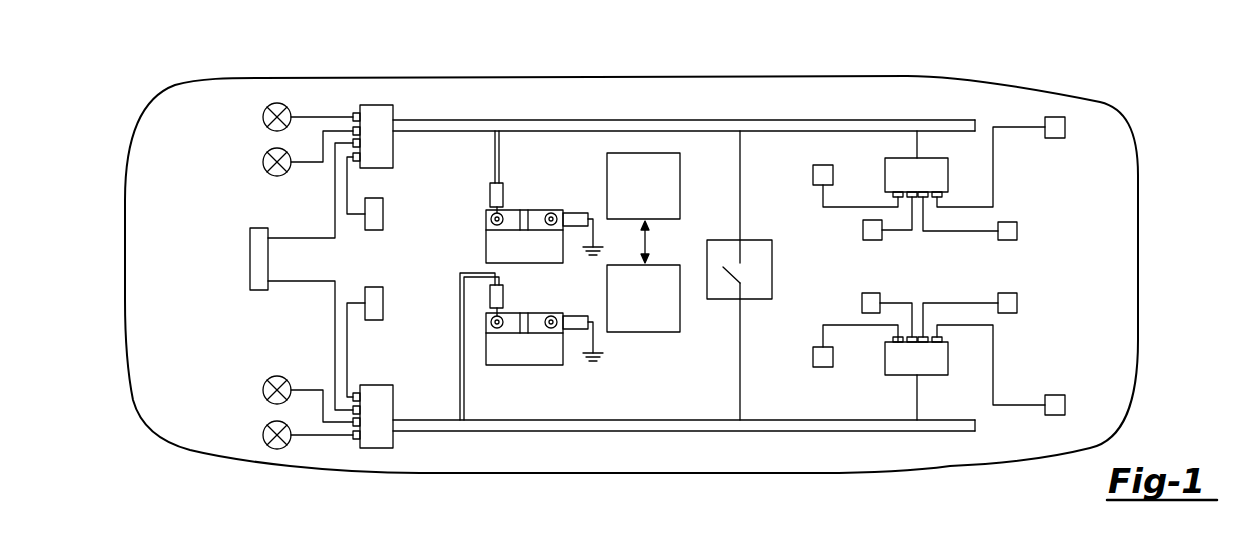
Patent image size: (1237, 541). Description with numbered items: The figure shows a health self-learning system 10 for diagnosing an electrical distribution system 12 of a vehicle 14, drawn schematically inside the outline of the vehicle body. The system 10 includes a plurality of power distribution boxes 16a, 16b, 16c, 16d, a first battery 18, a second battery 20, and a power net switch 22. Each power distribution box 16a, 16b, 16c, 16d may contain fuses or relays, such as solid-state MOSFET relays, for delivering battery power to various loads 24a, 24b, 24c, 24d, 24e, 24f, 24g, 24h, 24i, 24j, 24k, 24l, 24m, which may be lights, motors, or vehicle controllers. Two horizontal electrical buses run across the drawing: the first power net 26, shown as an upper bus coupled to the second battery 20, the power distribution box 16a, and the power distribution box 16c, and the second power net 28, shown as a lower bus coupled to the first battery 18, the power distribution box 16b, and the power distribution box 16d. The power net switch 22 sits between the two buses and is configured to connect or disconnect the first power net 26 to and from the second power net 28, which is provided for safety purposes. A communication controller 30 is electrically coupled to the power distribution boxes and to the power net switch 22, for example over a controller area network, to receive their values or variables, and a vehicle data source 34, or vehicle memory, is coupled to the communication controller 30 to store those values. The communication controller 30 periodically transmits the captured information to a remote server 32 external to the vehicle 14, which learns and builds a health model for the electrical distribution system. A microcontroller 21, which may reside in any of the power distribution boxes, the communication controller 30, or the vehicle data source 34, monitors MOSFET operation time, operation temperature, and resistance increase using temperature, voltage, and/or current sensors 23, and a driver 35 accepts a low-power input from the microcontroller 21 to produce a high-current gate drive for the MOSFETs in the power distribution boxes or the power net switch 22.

The health self-learning system 10 is at (908, 55).
The electrical distribution system 12 is at (537, 75).
The vehicle 14 is at (725, 58).
The power distribution box 16a is at (377, 104).
The power distribution box 16b is at (375, 448).
The power distribution box 16c is at (948, 175).
The power distribution box 16d is at (948, 358).
The first battery 18 is at (525, 365).
The second battery 20 is at (535, 208).
The microcontroller 21 is at (194, 266).
The power net switch 22 is at (722, 240).
The sensors 23 is at (239, 202).
The load 24a is at (262, 117).
The load 24b is at (262, 162).
The load 24c is at (383, 214).
The load 24d is at (383, 303).
The load 24e is at (262, 390).
The load 24f is at (262, 435).
The load 24g is at (813, 176).
The load 24h is at (863, 230).
The load 24i is at (1017, 231).
The load 24j is at (1053, 117).
The load 24k is at (813, 357).
The load 24l is at (1017, 303).
The load 24m is at (1055, 395).
The first power net 26 is at (478, 120).
The second power net 28 is at (693, 432).
The communication controller 30 is at (607, 185).
The remote server 32 is at (668, 42).
The vehicle data source 34 is at (647, 333).
The driver 35 is at (194, 331).